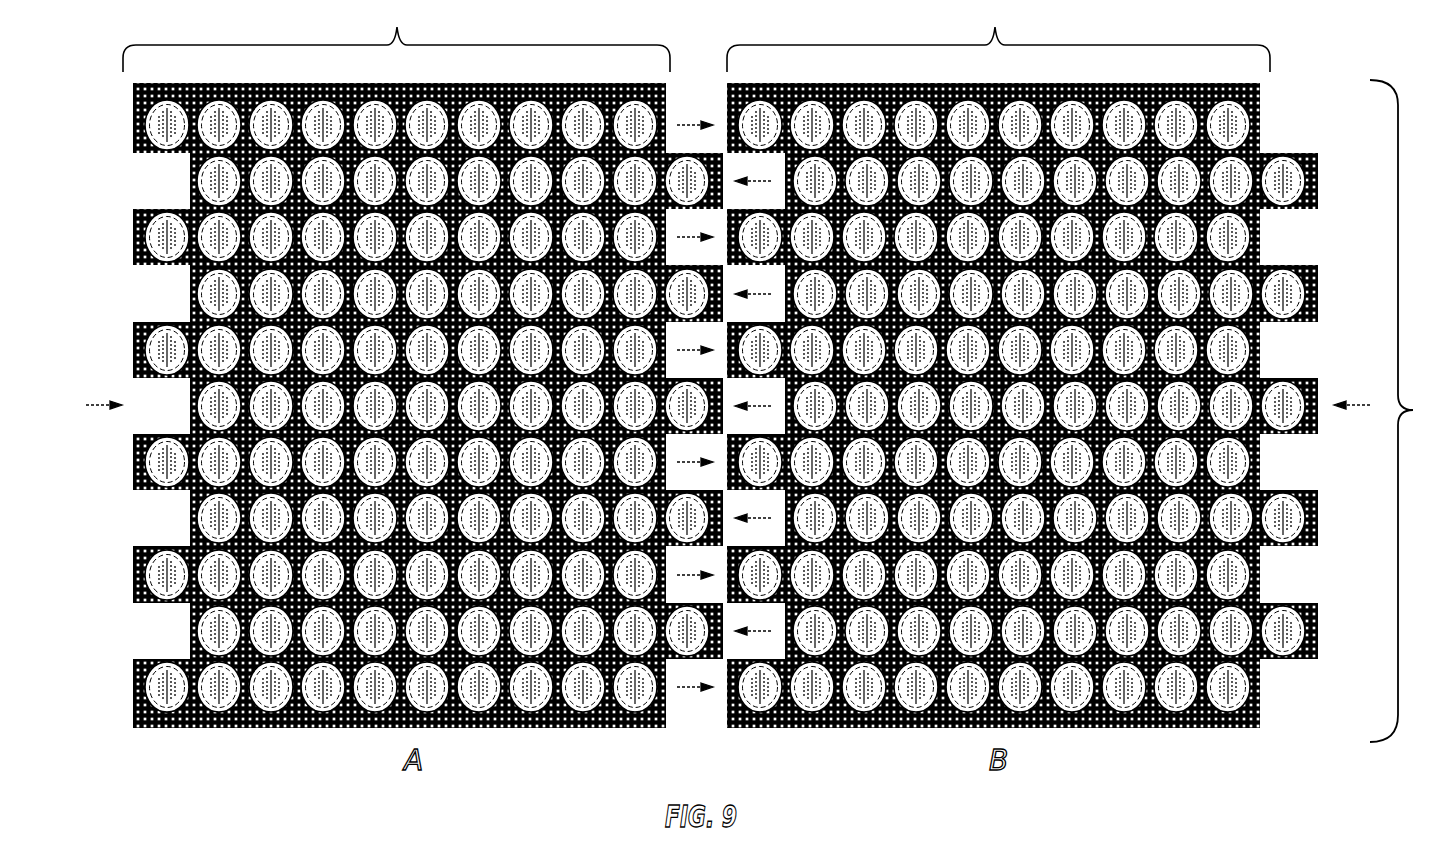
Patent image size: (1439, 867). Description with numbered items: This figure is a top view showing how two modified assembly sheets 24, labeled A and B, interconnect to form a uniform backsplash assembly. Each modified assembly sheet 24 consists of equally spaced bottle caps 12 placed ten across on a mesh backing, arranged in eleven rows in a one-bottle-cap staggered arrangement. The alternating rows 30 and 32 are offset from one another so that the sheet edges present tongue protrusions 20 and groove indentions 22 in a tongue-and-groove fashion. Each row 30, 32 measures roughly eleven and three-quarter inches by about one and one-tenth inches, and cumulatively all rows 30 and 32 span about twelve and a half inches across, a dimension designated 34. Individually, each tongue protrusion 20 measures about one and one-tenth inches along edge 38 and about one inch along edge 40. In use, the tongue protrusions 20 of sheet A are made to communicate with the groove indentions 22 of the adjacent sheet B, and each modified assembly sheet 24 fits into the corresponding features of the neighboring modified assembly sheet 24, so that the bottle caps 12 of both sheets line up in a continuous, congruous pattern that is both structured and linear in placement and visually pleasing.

The bottle cap 12 is at (167, 687).
The tongue protrusion 20 is at (133, 696).
The groove indention 22 is at (160, 633).
The modified assembly sheet 24 is at (696, 36).
The row 30 is at (1295, 120).
The row 32 is at (1323, 182).
The cumulative width of rows 34 is at (1404, 411).
The edge 38 is at (133, 124).
The edge 40 is at (160, 185).